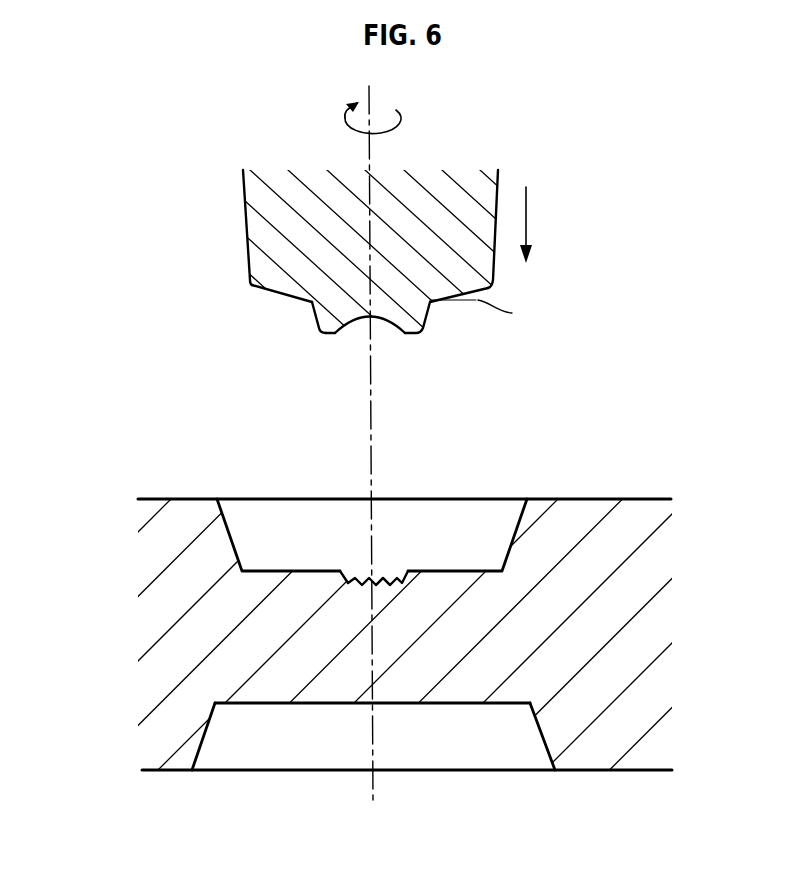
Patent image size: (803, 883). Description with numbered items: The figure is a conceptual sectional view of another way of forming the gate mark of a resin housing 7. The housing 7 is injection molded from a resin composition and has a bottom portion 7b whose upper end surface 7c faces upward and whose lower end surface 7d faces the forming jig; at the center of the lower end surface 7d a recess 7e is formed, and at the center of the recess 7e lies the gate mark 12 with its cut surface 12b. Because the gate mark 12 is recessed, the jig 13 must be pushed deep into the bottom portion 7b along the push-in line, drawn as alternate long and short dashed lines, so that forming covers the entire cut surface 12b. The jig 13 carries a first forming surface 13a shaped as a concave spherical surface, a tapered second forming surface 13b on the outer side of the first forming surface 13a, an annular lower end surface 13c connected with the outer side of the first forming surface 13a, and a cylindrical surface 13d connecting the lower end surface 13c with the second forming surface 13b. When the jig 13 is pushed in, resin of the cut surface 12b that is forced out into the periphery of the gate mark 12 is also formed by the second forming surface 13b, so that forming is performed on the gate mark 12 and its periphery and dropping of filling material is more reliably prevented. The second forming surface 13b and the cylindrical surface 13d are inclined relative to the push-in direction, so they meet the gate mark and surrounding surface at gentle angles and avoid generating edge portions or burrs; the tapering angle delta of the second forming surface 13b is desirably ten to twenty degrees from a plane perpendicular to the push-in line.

The housing 7 is at (401, 612).
The bottom portion 7b is at (287, 667).
The upper end surface 7c is at (317, 703).
The lower end surface 7d is at (605, 499).
The recess 7e is at (283, 566).
The gate mark 12 is at (357, 558).
The cut surface 12b is at (392, 577).
The jig 13 is at (395, 276).
The forming surface 13a is at (387, 326).
The tapered forming surface 13b is at (282, 300).
The lower end surface 13c is at (325, 334).
The cylindrical surface 13d is at (317, 325).